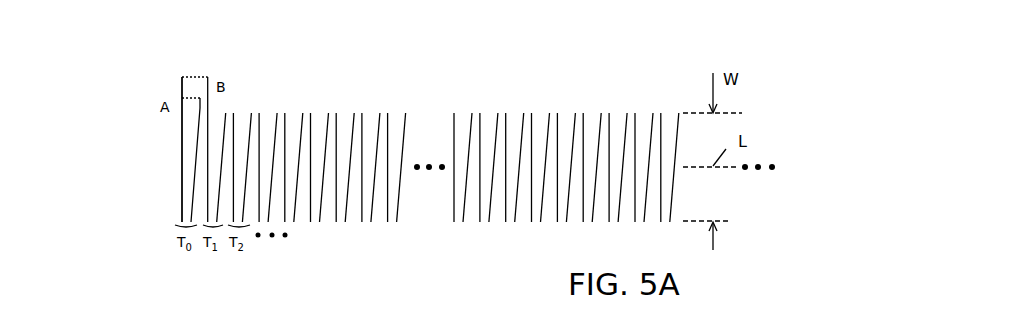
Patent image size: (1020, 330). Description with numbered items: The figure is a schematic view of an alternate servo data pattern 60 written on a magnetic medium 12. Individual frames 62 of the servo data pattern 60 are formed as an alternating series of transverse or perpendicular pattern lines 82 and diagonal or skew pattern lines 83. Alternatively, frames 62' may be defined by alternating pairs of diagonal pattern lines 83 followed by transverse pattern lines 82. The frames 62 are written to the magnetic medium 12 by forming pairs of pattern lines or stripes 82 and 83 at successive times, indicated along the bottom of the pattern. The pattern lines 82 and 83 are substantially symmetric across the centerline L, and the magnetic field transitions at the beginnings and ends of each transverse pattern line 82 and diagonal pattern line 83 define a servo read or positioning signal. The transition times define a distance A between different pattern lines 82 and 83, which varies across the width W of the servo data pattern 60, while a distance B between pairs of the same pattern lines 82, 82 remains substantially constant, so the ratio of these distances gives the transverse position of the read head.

The magnetic medium 12 is at (113, 155).
The servo data pattern 60 is at (628, 93).
The frame 62 is at (154, 163).
The frame 62' is at (354, 127).
The transverse pattern line 82 is at (180, 180).
The diagonal pattern line 83 is at (254, 110).